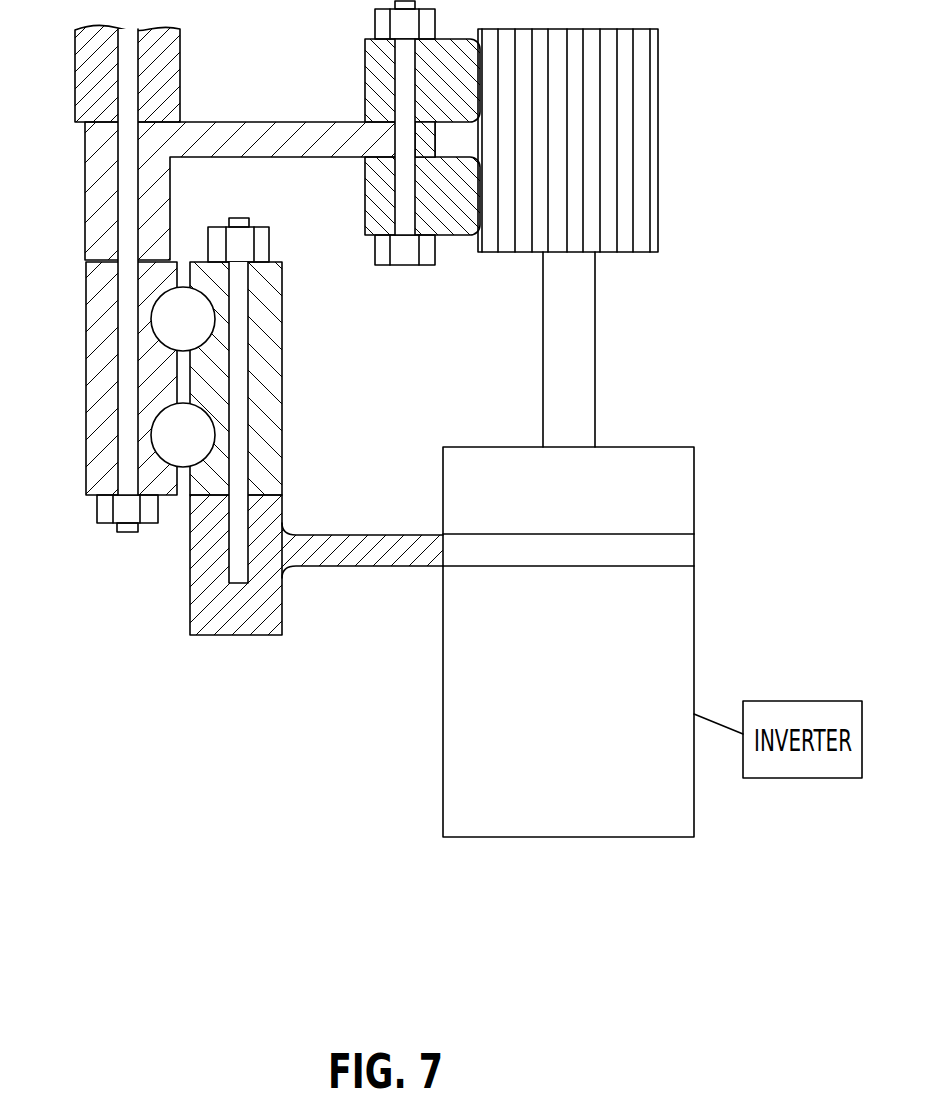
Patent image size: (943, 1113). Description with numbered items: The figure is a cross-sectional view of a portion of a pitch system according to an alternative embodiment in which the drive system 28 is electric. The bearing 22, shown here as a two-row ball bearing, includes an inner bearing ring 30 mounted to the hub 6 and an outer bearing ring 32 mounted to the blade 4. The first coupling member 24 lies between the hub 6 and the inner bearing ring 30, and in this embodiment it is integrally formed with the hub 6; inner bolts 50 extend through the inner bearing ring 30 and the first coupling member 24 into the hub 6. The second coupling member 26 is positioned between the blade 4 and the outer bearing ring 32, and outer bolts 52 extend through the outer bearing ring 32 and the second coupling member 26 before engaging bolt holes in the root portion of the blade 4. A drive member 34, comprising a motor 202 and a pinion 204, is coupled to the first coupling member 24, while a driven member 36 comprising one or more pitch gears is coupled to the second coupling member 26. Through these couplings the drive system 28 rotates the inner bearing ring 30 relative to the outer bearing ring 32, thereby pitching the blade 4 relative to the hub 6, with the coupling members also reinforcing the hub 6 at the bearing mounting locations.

The blade 4 is at (75, 71).
The second coupling member 26 is at (85, 181).
The bearing 22 is at (80, 279).
The outer bearing ring 32 is at (86, 369).
The outer bolts 52 is at (118, 437).
The inner bearing ring 30 is at (283, 339).
The driven member 36 is at (365, 66).
The pinion 204 is at (658, 139).
The drive system 28 is at (772, 358).
The drive member 34 is at (684, 445).
The motor 202 is at (695, 500).
The inner bolts 50 is at (248, 512).
The hub 6 is at (190, 602).
The first coupling member 24 is at (358, 567).